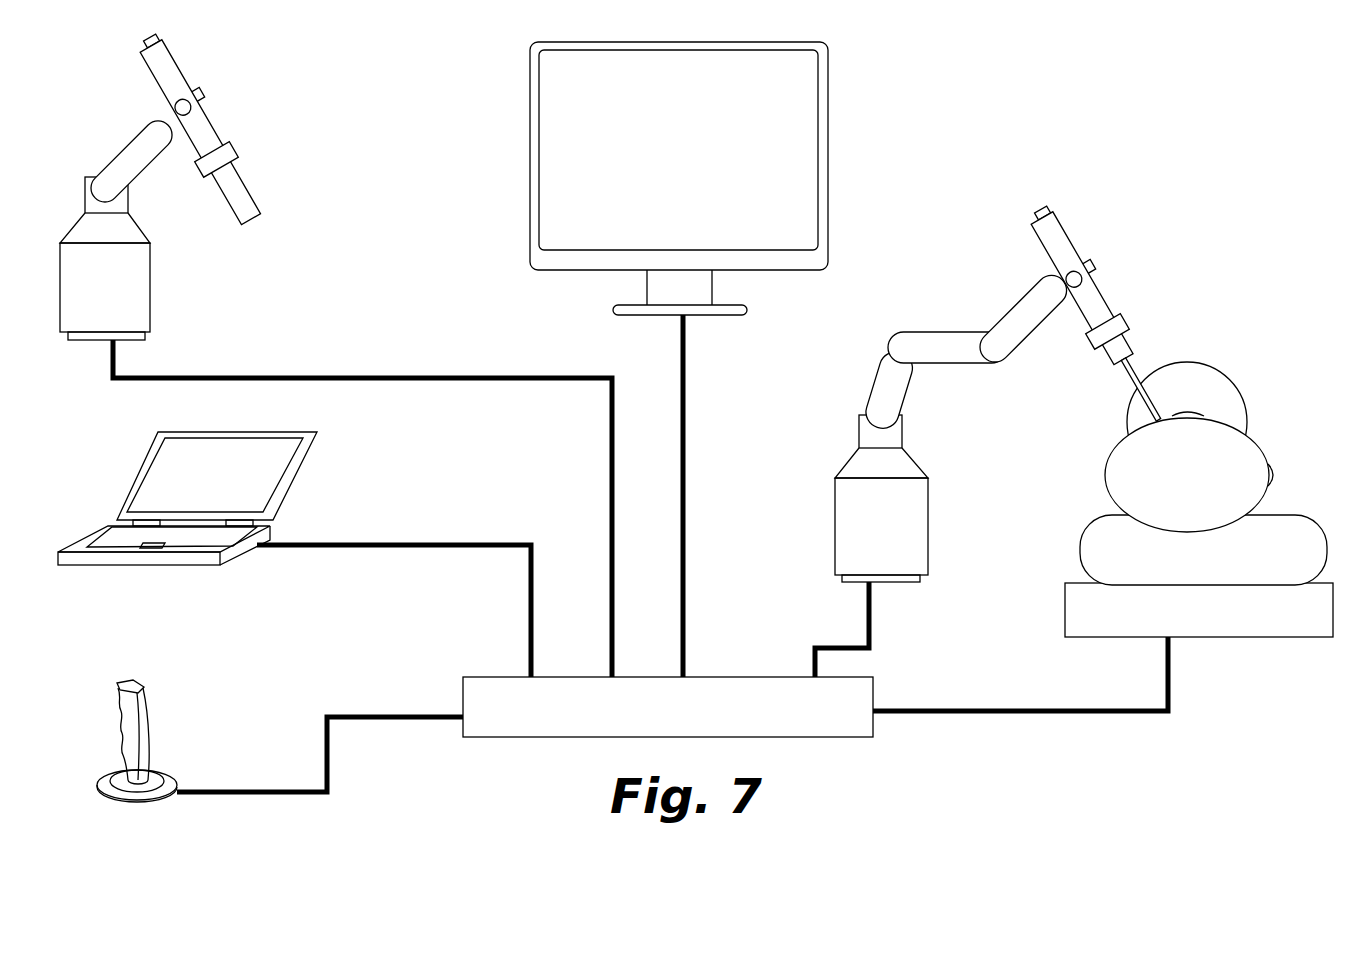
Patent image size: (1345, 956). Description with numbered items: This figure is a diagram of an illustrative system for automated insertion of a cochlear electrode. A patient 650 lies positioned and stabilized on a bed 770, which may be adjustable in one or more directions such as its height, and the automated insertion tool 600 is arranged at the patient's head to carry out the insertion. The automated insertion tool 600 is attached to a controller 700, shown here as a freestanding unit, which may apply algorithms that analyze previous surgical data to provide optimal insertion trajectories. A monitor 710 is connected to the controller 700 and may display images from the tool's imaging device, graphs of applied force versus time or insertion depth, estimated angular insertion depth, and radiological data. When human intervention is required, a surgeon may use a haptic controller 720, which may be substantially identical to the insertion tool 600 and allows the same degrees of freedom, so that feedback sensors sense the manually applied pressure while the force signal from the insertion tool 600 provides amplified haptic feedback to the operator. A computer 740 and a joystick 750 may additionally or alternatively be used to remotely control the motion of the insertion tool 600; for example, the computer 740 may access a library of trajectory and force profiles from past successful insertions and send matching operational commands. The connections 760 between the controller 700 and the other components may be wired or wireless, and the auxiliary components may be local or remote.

The automated insertion tool 600 is at (1010, 401).
The patient 650 is at (1247, 440).
The controller 700 is at (668, 707).
The monitor 710 is at (828, 82).
The haptic controller 720 is at (191, 184).
The computer 740 is at (132, 483).
The joystick 750 is at (147, 730).
The connections 760 is at (400, 378).
The bed 770 is at (1252, 618).